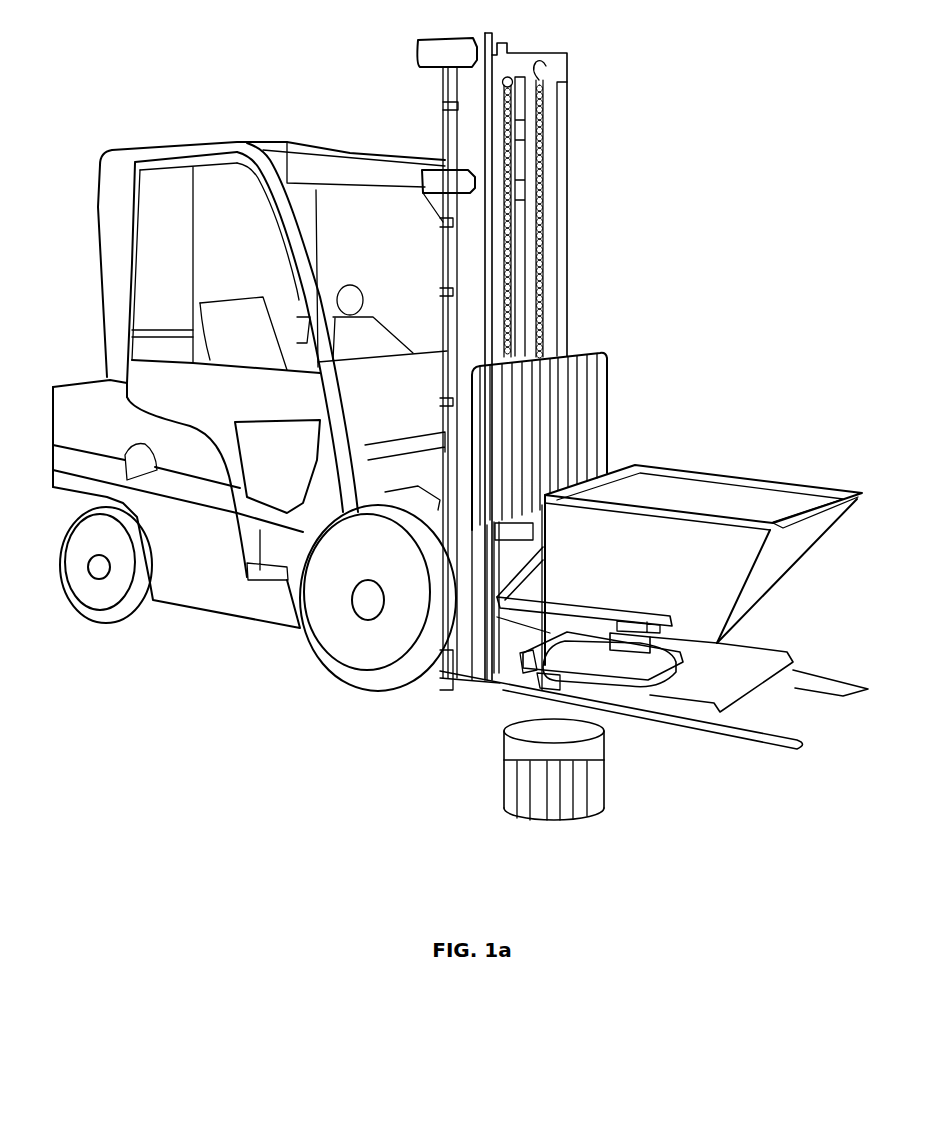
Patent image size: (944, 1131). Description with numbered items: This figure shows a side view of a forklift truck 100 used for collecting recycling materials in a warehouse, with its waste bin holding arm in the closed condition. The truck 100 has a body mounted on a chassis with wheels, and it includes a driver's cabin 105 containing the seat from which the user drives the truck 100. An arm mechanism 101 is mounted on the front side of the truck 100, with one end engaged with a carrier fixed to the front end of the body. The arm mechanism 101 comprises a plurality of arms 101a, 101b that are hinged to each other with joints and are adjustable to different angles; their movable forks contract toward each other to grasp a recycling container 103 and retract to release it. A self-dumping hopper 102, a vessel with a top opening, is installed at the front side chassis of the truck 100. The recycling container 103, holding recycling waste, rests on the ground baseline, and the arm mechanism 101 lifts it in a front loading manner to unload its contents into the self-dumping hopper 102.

The truck 100 is at (784, 31).
The arm mechanism 101 is at (465, 670).
The arm 101a is at (495, 682).
The arm 101b is at (652, 660).
The self-dumping hopper 102 is at (677, 492).
The recycling container 103 is at (535, 822).
The driver's cabin 105 is at (348, 252).